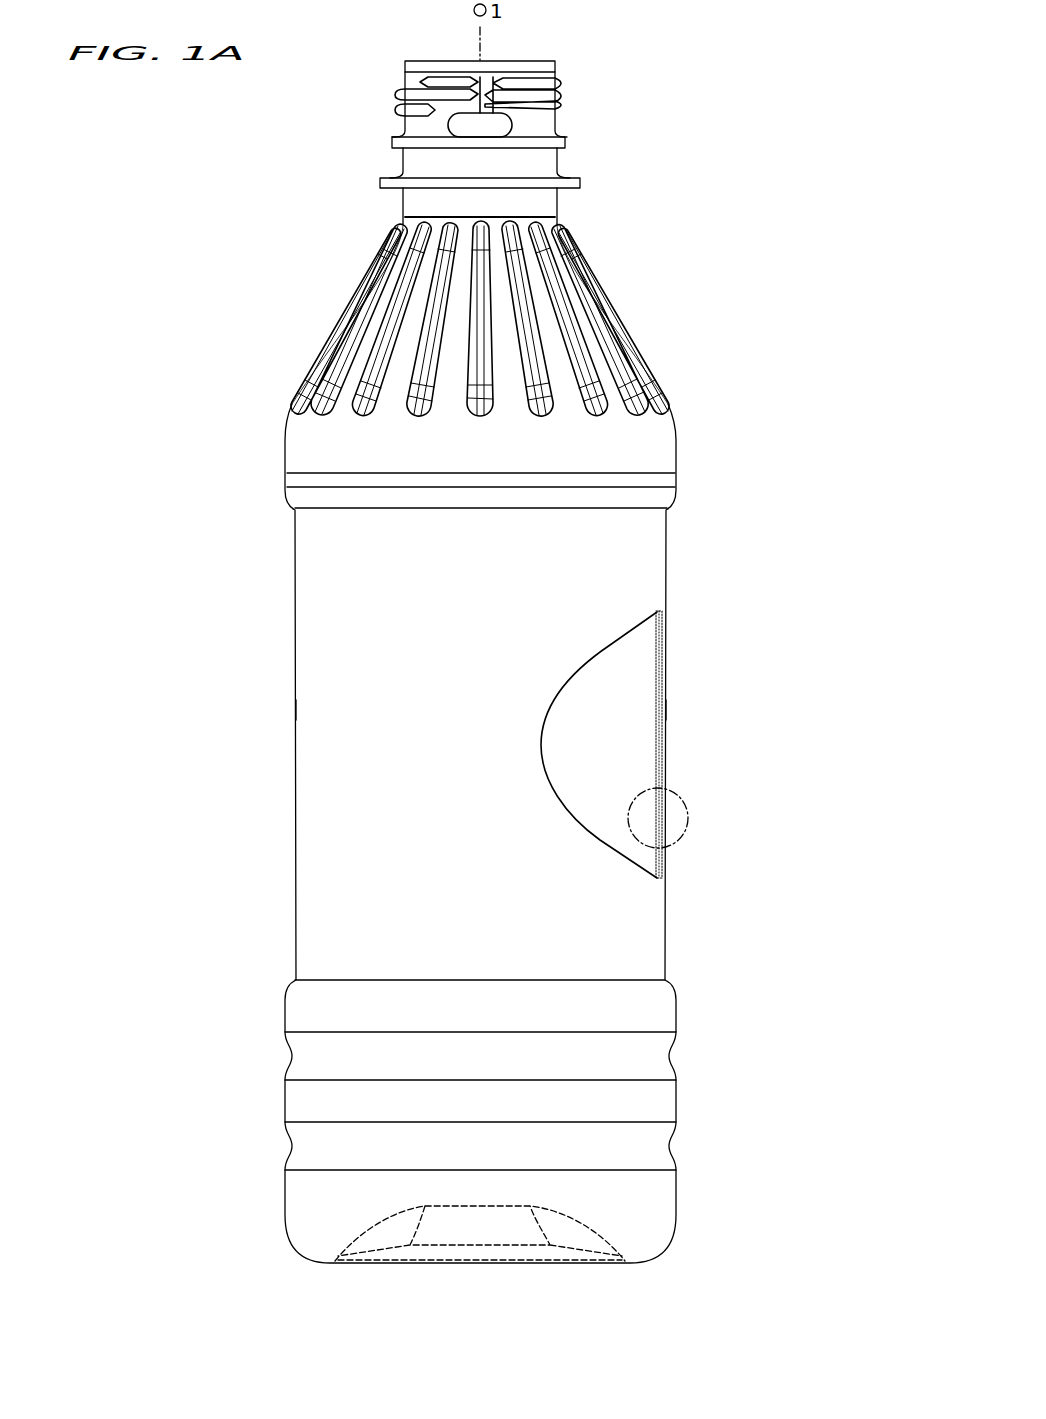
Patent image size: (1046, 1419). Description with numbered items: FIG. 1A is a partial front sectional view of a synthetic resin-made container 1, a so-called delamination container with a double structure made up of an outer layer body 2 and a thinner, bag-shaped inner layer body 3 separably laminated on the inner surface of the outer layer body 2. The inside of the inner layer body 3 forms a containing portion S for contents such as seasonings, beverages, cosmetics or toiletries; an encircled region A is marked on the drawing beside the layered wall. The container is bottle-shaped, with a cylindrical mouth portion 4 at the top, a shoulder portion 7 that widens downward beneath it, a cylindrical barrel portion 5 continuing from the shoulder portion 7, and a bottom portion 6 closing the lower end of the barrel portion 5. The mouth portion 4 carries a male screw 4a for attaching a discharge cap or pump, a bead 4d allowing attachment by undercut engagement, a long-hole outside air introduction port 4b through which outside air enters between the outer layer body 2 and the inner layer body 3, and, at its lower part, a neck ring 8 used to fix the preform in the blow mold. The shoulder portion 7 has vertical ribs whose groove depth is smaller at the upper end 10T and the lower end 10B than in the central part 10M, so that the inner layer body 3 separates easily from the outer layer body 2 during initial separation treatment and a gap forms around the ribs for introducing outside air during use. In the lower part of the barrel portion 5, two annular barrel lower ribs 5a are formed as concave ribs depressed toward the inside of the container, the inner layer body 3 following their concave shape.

The synthetic resin-made container 1 is at (741, 164).
The mouth portion 4 is at (570, 118).
The male screw 4a is at (558, 84).
The outside air introduction port 4b is at (456, 120).
The bead 4d is at (564, 144).
The neck ring 8 is at (578, 182).
The upper end of vertical rib 10T is at (512, 218).
The central part of vertical rib 10M is at (534, 302).
The shoulder portion 7 is at (660, 347).
The lower end of vertical rib 10B is at (552, 420).
The outer layer body 2 is at (661, 720).
The inner layer body 3 is at (657, 722).
The barrel portion 5 is at (674, 761).
The barrel lower rib 5a is at (668, 1054).
The bottom portion 6 is at (571, 1272).
The containing portion S is at (583, 779).
The region A is at (684, 838).